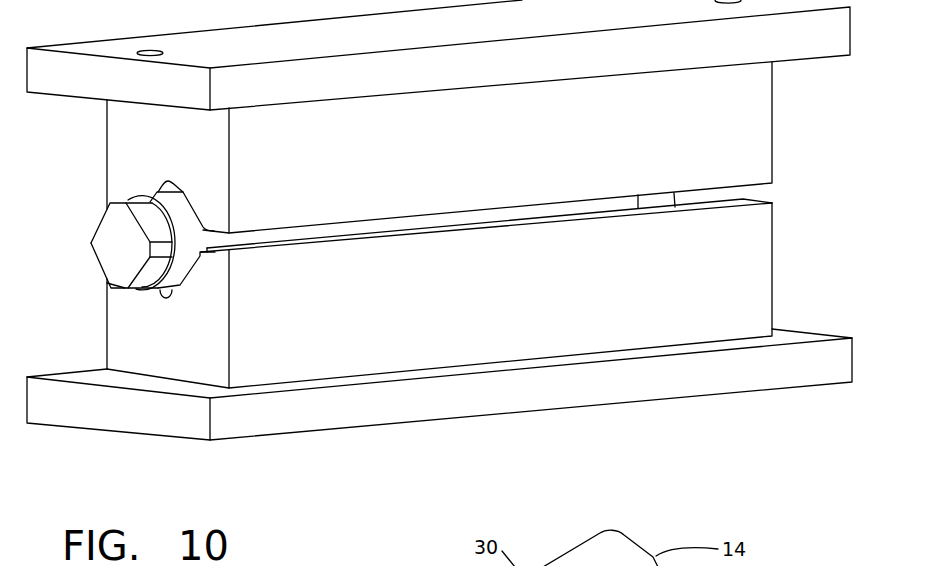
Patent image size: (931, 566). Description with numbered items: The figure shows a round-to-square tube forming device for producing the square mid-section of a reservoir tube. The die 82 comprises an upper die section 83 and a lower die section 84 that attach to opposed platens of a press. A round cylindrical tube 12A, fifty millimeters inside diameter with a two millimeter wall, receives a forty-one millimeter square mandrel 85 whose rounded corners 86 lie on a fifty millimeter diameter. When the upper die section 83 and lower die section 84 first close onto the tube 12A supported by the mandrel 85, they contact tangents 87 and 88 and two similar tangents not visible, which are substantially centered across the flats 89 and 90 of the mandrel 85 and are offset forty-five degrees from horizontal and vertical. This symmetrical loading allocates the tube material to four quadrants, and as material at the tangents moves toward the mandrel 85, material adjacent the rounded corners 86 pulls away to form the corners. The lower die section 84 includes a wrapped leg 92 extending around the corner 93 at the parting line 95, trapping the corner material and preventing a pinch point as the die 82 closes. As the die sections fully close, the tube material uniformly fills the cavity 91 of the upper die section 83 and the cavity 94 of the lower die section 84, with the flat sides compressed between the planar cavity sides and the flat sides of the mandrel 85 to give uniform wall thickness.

The die 82 is at (786, 161).
The upper die section 83 is at (772, 93).
The lower die section 84 is at (772, 252).
The mandrel 85 is at (100, 244).
The rounded corners 86 is at (95, 233).
The tangent 87 is at (181, 194).
The tangent 88 is at (193, 268).
The flat 89 is at (157, 220).
The flat 90 is at (147, 277).
The cavity 91 is at (164, 184).
The wrapped leg 92 is at (208, 258).
The corner 93 is at (202, 257).
The cavity 94 is at (163, 299).
The parting line 95 is at (290, 237).
The round cylindrical tube 12A is at (220, 238).